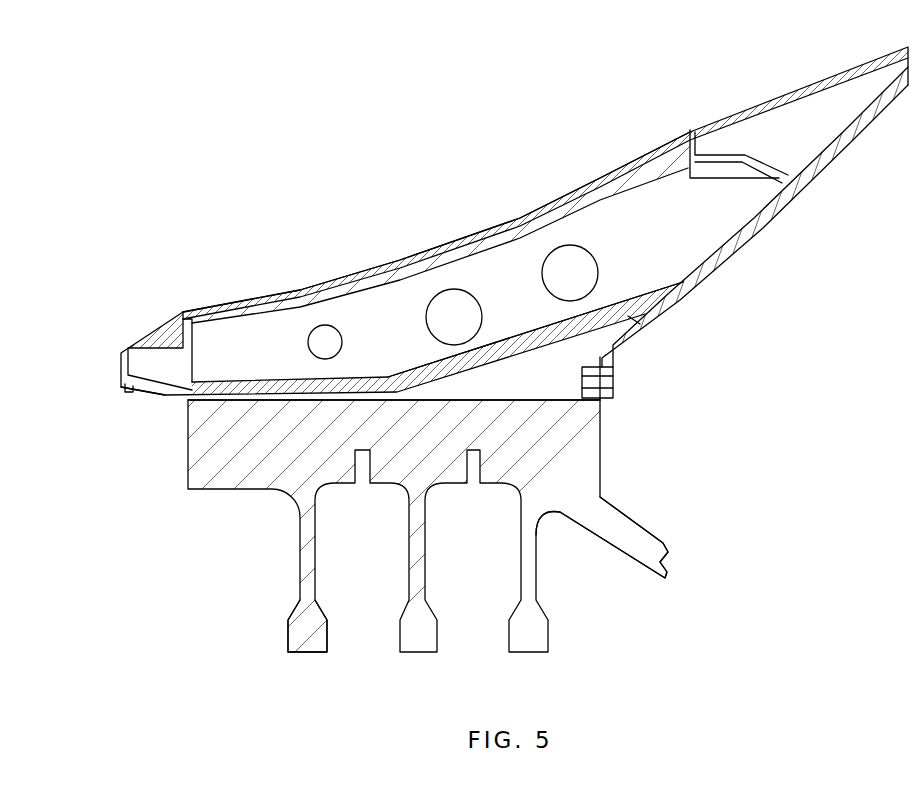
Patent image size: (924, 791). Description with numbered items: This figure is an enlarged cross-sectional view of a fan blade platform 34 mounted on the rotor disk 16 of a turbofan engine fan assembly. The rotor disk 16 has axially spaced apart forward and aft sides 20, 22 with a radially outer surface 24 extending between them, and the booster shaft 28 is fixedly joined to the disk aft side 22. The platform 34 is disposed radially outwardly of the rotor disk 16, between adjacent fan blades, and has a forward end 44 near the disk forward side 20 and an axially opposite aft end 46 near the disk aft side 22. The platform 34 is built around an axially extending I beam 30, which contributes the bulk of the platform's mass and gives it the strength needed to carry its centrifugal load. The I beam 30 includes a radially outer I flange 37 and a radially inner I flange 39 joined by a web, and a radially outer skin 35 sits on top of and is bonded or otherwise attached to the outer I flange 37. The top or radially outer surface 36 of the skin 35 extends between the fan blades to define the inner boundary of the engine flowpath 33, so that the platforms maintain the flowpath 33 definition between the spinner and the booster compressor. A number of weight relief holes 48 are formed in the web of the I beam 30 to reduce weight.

The rotor disk 16 is at (288, 636).
The forward side 20 is at (188, 447).
The aft side 22 is at (601, 453).
The radially outer surface 24 is at (508, 398).
The booster shaft 28 is at (851, 141).
The I beam 30 is at (421, 393).
The flowpath 33 is at (87, 307).
The platform 34 is at (315, 276).
The radially outer skin 35 is at (416, 255).
The radially outer surface 36 is at (491, 228).
The radially outer I flange 37 is at (612, 320).
The radially inner I flange 39 is at (656, 176).
The forward end 44 is at (224, 304).
The aft end 46 is at (660, 289).
The weight relief holes 48 is at (590, 253).